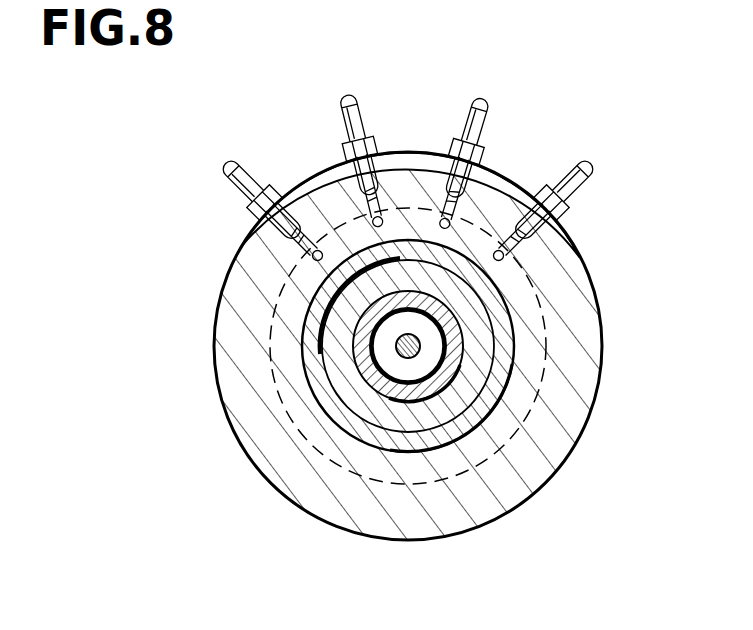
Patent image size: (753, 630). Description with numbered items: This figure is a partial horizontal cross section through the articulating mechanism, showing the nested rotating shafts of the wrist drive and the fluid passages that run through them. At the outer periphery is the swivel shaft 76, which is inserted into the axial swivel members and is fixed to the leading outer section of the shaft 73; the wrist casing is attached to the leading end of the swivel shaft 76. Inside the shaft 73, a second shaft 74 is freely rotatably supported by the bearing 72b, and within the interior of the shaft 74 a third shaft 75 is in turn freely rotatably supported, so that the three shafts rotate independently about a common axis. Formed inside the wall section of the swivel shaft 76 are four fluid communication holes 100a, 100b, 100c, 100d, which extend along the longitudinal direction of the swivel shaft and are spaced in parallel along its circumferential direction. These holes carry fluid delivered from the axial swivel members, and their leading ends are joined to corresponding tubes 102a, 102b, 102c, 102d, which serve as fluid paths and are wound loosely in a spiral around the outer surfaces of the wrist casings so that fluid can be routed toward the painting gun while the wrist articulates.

The bearing 72b is at (380, 402).
The shaft 73 is at (322, 395).
The shaft 74 is at (393, 395).
The shaft 75 is at (418, 352).
The swivel shaft 76 is at (214, 362).
The fluid communication hole 100a is at (310, 222).
The fluid communication hole 100b is at (397, 175).
The fluid communication hole 100c is at (468, 195).
The fluid communication hole 100d is at (542, 259).
The tube (fluid path) 102a is at (240, 179).
The tube (fluid path) 102b is at (349, 114).
The tube (fluid path) 102c is at (484, 108).
The tube (fluid path) 102d is at (588, 187).